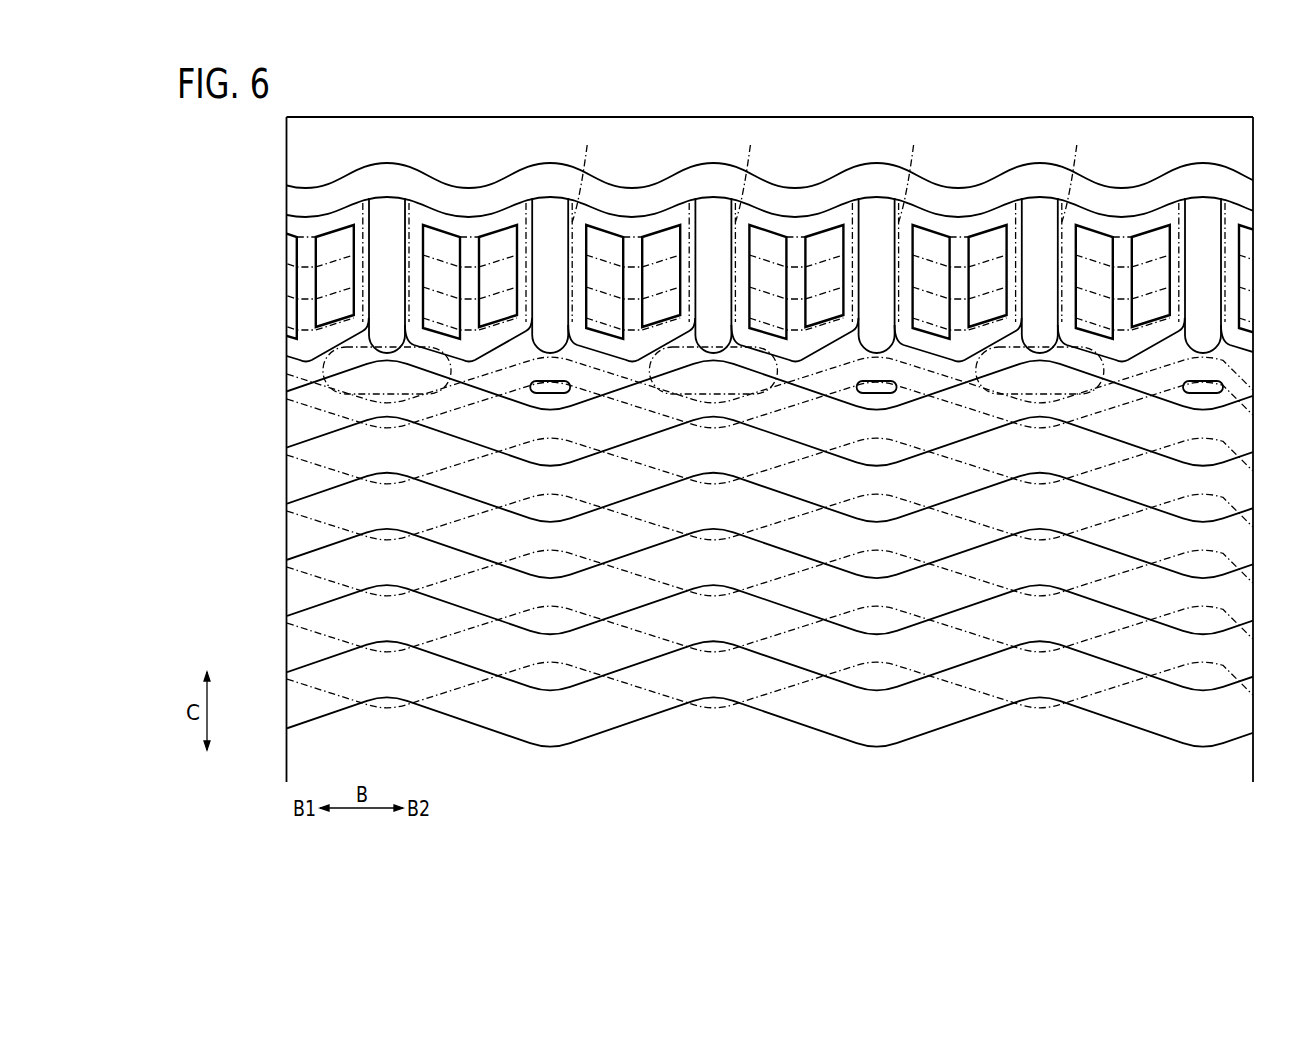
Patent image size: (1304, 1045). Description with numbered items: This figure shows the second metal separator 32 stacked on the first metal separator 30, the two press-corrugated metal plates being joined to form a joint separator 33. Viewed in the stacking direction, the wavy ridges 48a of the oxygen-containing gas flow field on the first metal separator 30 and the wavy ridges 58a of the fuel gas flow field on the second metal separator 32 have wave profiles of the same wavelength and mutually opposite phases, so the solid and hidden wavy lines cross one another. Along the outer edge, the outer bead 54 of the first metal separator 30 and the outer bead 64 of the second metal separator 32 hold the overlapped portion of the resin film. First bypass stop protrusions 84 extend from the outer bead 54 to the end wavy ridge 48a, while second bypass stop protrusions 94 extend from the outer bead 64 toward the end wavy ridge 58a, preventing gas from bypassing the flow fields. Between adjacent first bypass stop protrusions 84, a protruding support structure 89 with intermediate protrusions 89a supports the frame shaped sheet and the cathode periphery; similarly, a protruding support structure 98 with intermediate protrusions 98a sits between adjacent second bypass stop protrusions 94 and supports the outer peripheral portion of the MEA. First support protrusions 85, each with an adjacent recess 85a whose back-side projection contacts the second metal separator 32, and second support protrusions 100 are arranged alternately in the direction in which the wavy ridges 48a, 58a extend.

The first metal separator 30 is at (1152, 115).
The second metal separator 32 is at (1184, 115).
The joint separator 33 is at (764, 142).
The outer bead 54 is at (1170, 182).
The outer bead 64 is at (1214, 178).
The first bypass stop protrusions 84 is at (550, 212).
The second bypass stop protrusions 94 is at (854, 172).
The protruding support structure 89 is at (423, 215).
The intermediate protrusions 89a is at (492, 282).
The protruding support structure 98 is at (519, 213).
The intermediate protrusions 98a is at (507, 300).
The first support protrusions 85 is at (858, 430).
The recess 85a is at (540, 394).
The second support protrusions 100 is at (330, 363).
The wavy ridges 58a is at (470, 402).
The wavy ridges 48a is at (790, 402).